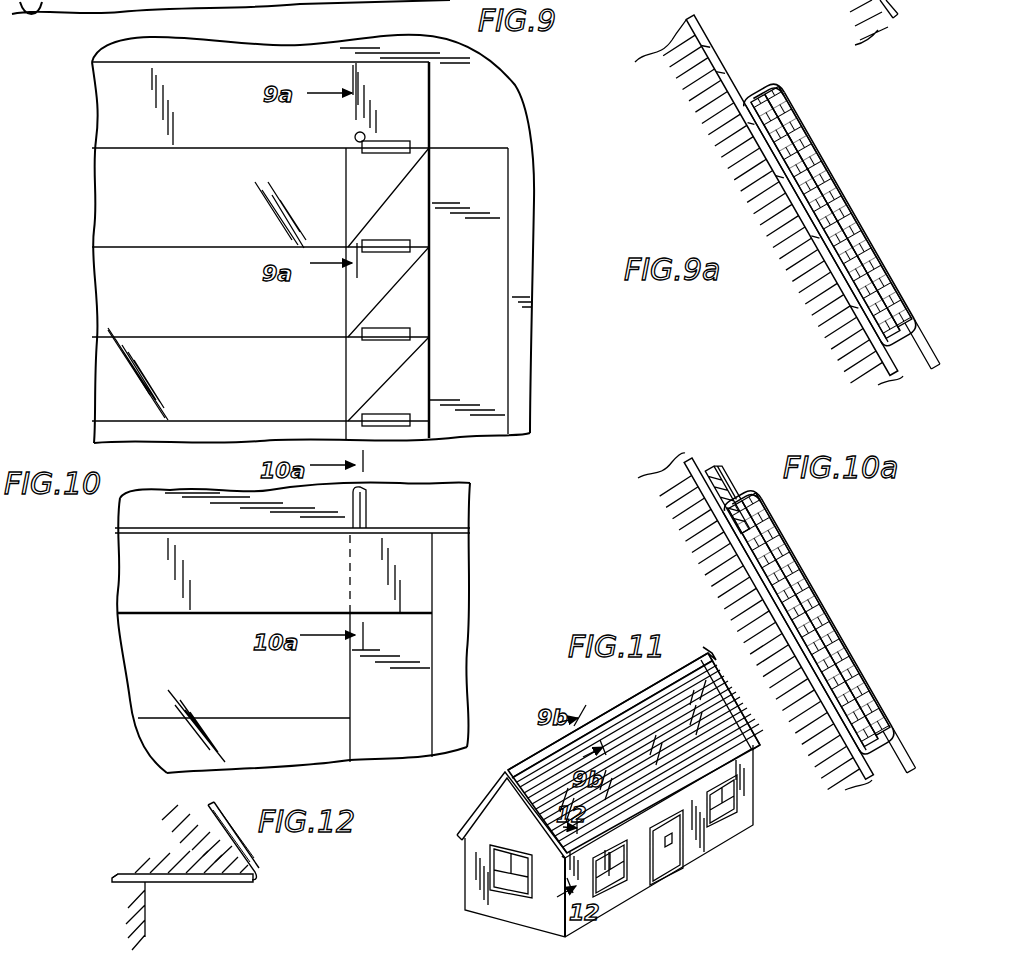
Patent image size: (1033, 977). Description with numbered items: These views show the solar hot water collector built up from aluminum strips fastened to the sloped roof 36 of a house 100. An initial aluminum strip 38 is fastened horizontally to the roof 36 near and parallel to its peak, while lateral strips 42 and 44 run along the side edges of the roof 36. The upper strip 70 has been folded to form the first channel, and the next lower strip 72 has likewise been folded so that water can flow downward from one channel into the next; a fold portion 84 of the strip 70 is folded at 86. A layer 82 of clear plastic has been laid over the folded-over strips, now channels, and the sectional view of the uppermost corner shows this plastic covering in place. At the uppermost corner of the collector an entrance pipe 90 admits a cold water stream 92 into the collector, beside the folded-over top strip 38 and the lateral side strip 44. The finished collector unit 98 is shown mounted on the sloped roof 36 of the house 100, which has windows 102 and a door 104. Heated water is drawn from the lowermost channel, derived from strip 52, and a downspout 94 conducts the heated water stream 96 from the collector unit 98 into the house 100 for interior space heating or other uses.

In FIG. 9, the roof 36 is at (508, 78).
In FIG. 9A, the roof 36 is at (700, 30).
In FIG. 11, the roof 36 is at (512, 766).
In FIG. 10, the initial aluminum strip 38 is at (432, 548).
In FIG. 10A, the initial aluminum strip 38 is at (793, 527).
In FIG. 9, the lateral strip 42 is at (36, 0).
In FIG. 10, the lateral strip 44 is at (417, 647).
In FIG. 10A, the lateral strip 44 is at (880, 638).
In FIG. 12, the strip 52 is at (270, 866).
In FIG. 9, the upper strip 70 is at (99, 229).
In FIG. 9A, the upper strip 70 is at (833, 213).
In FIG. 9, the next lower strip 72 is at (98, 295).
In FIG. 9, the layer of clear plastic 82 is at (123, 363).
In FIG. 9A, the layer of clear plastic 82 is at (824, 166).
In FIG. 10A, the layer of clear plastic 82 is at (863, 670).
In FIG. 9, the fold portion 84 is at (350, 183).
In FIG. 9A, the fold portion 84 is at (847, 233).
In FIG. 10A, the fold portion 84 is at (872, 692).
In FIG. 9, the fold 86 is at (383, 200).
In FIG. 10, the entrance pipe 90 is at (367, 500).
In FIG. 10A, the entrance pipe 90 is at (732, 470).
In FIG. 11, the entrance pipe 90 is at (708, 652).
In FIG. 10A, the cold water stream 92 is at (710, 456).
In FIG. 11, the downspout 94 is at (573, 860).
In FIG. 12, the downspout 94 is at (213, 883).
In FIG. 12, the heated water stream 96 is at (95, 858).
In FIG. 11, the collector unit 98 is at (750, 744).
In FIG. 11, the house 100 is at (472, 866).
In FIG. 11, the windows 102 is at (508, 882).
In FIG. 11, the door 104 is at (672, 863).